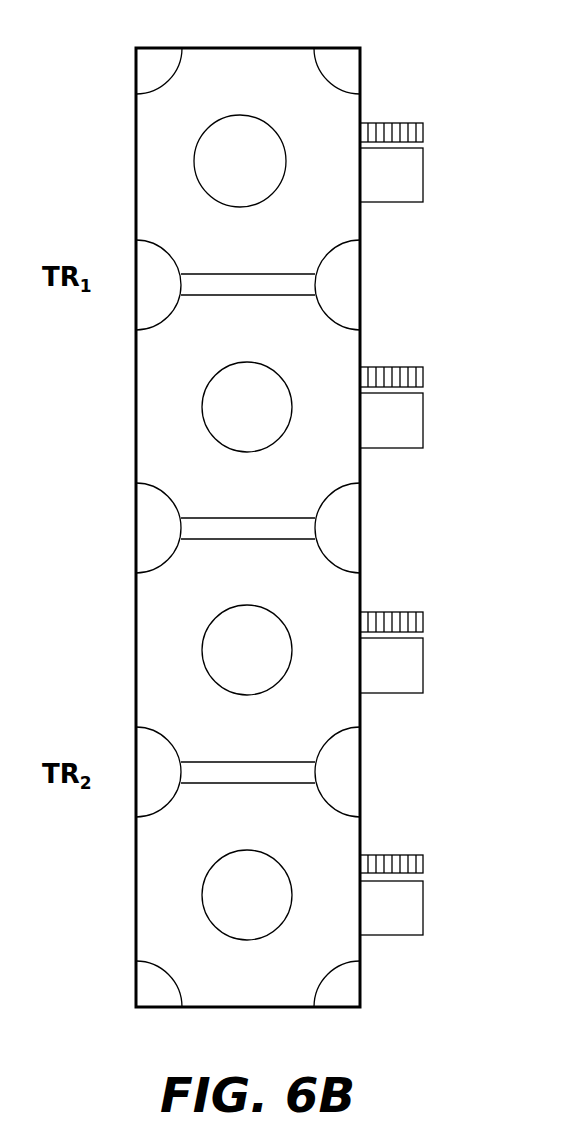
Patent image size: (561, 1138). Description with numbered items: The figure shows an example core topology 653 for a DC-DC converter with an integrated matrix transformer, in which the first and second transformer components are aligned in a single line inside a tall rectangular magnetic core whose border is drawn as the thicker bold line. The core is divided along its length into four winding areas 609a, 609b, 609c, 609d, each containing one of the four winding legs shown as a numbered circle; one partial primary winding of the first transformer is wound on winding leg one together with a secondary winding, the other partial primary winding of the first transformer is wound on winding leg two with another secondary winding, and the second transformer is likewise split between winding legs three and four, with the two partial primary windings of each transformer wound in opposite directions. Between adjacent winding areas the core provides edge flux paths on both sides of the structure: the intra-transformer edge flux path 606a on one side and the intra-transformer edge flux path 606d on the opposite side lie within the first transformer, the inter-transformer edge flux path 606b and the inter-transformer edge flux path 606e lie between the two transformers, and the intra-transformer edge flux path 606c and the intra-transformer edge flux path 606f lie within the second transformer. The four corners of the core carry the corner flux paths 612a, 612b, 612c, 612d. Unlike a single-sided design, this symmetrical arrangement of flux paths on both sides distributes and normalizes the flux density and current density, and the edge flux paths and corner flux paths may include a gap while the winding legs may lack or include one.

The core topology 653 is at (409, 47).
The corner flux path 612a is at (119, 48).
The corner flux path 612b is at (119, 972).
The corner flux path 612c is at (365, 70).
The corner flux path 612d is at (373, 990).
The intra-transformer edge flux path 606a is at (119, 243).
The inter-transformer edge flux path 606b is at (119, 484).
The intra-transformer edge flux path 606c is at (119, 728).
The intra-transformer edge flux path 606d is at (374, 258).
The inter-transformer edge flux path 606e is at (374, 500).
The intra-transformer edge flux path 606f is at (374, 744).
The winding area 609a is at (240, 141).
The winding area 609b is at (247, 386).
The winding area 609c is at (247, 629).
The winding area 609d is at (247, 874).